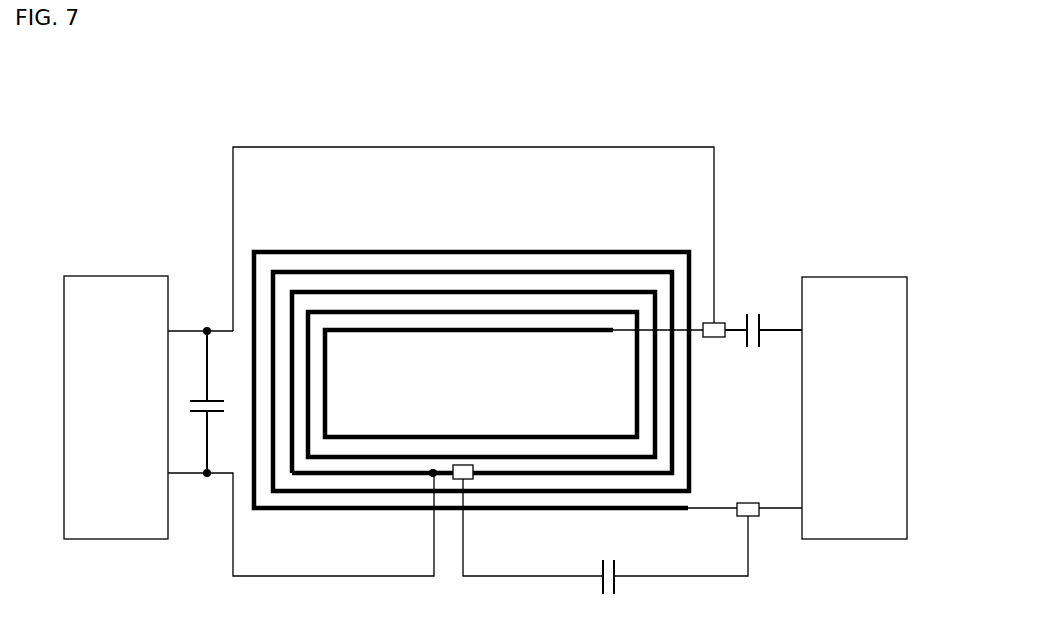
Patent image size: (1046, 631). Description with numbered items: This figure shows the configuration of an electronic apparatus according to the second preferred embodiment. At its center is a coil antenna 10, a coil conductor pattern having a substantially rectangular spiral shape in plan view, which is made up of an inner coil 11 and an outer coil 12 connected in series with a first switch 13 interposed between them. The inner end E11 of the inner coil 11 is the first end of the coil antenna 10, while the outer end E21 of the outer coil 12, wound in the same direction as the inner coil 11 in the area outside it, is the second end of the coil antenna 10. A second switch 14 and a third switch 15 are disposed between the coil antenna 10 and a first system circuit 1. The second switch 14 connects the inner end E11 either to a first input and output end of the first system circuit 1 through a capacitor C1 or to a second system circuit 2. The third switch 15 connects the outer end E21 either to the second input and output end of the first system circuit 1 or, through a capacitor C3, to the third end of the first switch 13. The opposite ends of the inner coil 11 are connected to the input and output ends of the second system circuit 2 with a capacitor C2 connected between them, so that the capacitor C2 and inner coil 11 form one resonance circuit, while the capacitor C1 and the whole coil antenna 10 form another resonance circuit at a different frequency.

The first system circuit 1 is at (852, 275).
The second system circuit 2 is at (110, 275).
The coil antenna 10 is at (471, 342).
The inner coil 11 is at (432, 329).
The outer coil 12 is at (403, 250).
The first switch 13 is at (457, 465).
The second switch 14 is at (718, 339).
The third switch 15 is at (757, 518).
The capacitor C1 is at (763, 324).
The capacitor C2 is at (217, 402).
The capacitor C3 is at (591, 583).
The inner end E11 is at (613, 330).
The outer end E21 is at (697, 507).